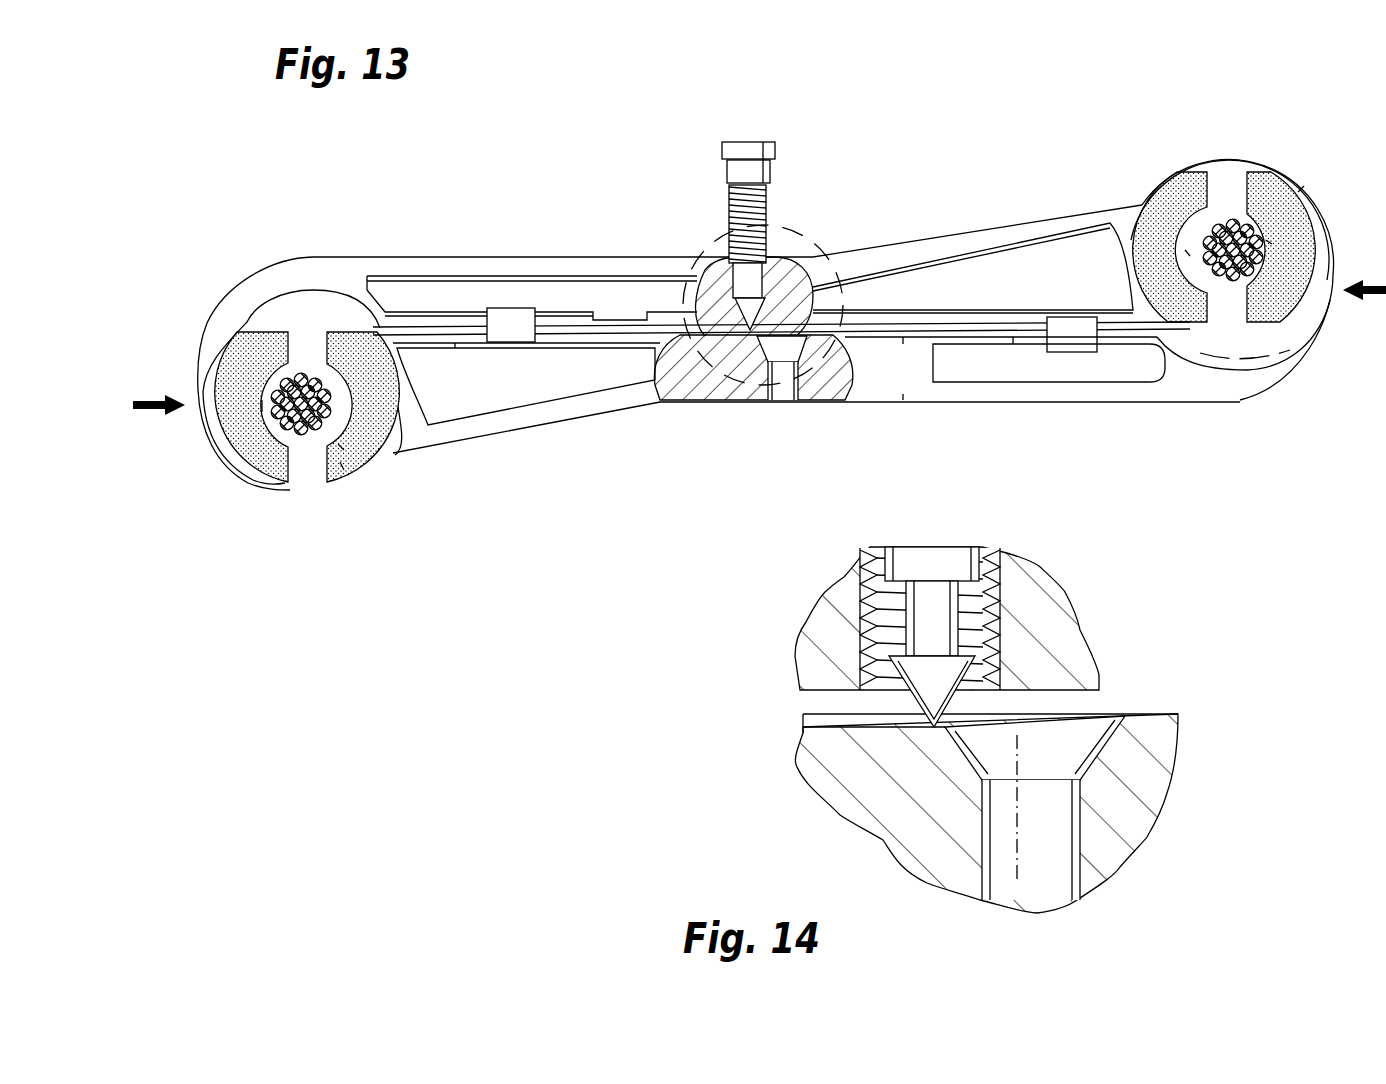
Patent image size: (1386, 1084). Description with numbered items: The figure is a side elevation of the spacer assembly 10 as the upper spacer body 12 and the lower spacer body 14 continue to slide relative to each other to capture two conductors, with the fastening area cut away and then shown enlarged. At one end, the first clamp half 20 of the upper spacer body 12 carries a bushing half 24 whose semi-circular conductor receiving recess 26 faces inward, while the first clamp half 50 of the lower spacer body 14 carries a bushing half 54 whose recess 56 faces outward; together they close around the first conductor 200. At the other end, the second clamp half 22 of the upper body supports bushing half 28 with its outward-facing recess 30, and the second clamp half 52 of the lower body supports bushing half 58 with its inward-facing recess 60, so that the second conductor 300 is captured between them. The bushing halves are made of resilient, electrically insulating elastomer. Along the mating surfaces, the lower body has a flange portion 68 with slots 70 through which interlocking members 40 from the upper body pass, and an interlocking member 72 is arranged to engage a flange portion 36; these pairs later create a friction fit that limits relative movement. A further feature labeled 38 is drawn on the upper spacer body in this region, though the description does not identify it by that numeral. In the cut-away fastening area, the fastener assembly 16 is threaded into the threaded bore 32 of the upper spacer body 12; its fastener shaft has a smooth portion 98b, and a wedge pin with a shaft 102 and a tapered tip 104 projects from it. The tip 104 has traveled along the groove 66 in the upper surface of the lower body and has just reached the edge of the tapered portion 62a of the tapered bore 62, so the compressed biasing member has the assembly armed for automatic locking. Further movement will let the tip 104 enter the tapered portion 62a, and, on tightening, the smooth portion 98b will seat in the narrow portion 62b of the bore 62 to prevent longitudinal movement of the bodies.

In FIG. 13, the spacer assembly 10 is at (953, 150).
In FIG. 13, the upper spacer body 12 is at (513, 257).
In FIG. 14, the upper spacer body 12 is at (1080, 622).
In FIG. 13, the lower spacer body 14 is at (505, 435).
In FIG. 14, the lower spacer body 14 is at (791, 780).
In FIG. 13, the fastener assembly 16 is at (711, 173).
In FIG. 13, the first clamp half 20 is at (200, 418).
In FIG. 13, the second clamp half 22 is at (1140, 197).
In FIG. 13, the bushing half 24 is at (240, 430).
In FIG. 13, the conductor receiving recess 26 is at (267, 407).
In FIG. 13, the bushing half 28 is at (1187, 187).
In FIG. 13, the conductor receiving recess 30 is at (1187, 248).
In FIG. 14, the threaded bore 32 is at (862, 608).
In FIG. 13, the flange portion 36 is at (433, 316).
In FIG. 13, the rail 38 is at (613, 318).
In FIG. 13, the interlocking member 40 is at (1067, 331).
In FIG. 13, the first clamp half 50 is at (393, 457).
In FIG. 13, the second clamp half 52 is at (1300, 190).
In FIG. 13, the bushing half 54 is at (340, 463).
In FIG. 13, the conductor receiving recess 56 is at (340, 447).
In FIG. 13, the bushing half 58 is at (1263, 197).
In FIG. 13, the conductor receiving recess 60 is at (1268, 237).
In FIG. 13, the tapered bore 62 is at (782, 401).
In FIG. 14, the tapered bore 62 is at (1037, 885).
In FIG. 14, the tapered portion 62a is at (1076, 739).
In FIG. 14, the narrow portion 62b is at (1057, 842).
In FIG. 13, the groove 66 is at (722, 240).
In FIG. 14, the groove 66 is at (821, 727).
In FIG. 13, the flange portion 68 is at (455, 344).
In FIG. 13, the slot 70 is at (904, 341).
In FIG. 13, the interlocking member 72 is at (516, 328).
In FIG. 14, the smooth portion 98b is at (922, 559).
In FIG. 14, the shaft 102 is at (930, 607).
In FIG. 14, the tapered tip 104 is at (930, 694).
In FIG. 13, the first conductor 200 is at (303, 440).
In FIG. 13, the second conductor 300 is at (1222, 217).